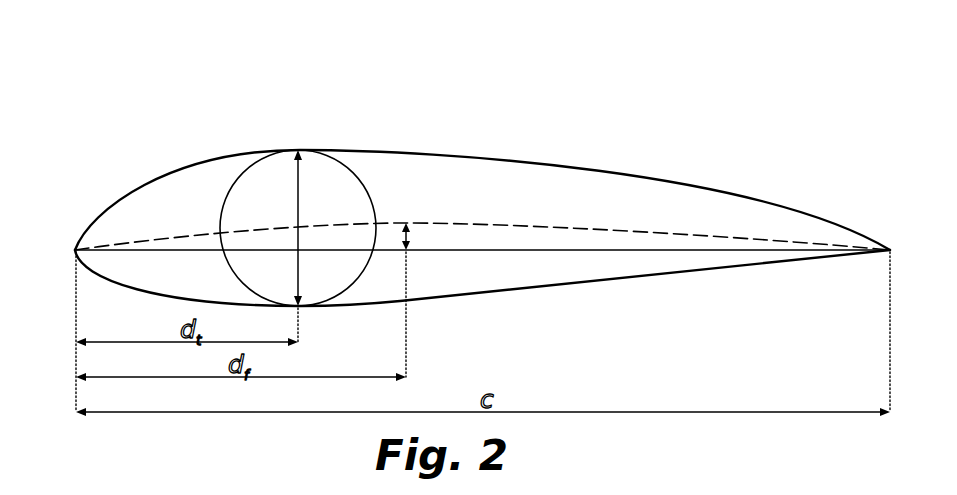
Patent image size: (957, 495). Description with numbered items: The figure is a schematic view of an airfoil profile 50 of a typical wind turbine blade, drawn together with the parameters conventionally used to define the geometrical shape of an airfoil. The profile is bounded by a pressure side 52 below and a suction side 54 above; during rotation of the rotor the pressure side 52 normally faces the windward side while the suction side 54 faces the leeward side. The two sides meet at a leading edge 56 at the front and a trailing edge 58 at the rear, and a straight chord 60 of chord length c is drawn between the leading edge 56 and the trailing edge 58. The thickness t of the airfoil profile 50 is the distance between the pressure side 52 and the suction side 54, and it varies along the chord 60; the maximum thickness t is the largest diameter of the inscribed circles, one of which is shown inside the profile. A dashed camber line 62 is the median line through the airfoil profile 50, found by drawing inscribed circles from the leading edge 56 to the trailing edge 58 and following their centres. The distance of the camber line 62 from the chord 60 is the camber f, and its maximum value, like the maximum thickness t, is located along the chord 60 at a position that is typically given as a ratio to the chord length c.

The airfoil profile 50 is at (465, 177).
The pressure side 52 is at (644, 281).
The suction side 54 is at (583, 165).
The leading edge 56 is at (75, 250).
The trailing edge 58 is at (890, 250).
The chord 60 is at (683, 250).
The camber line 62 is at (473, 220).
The thickness t is at (302, 202).
The camber f is at (413, 233).